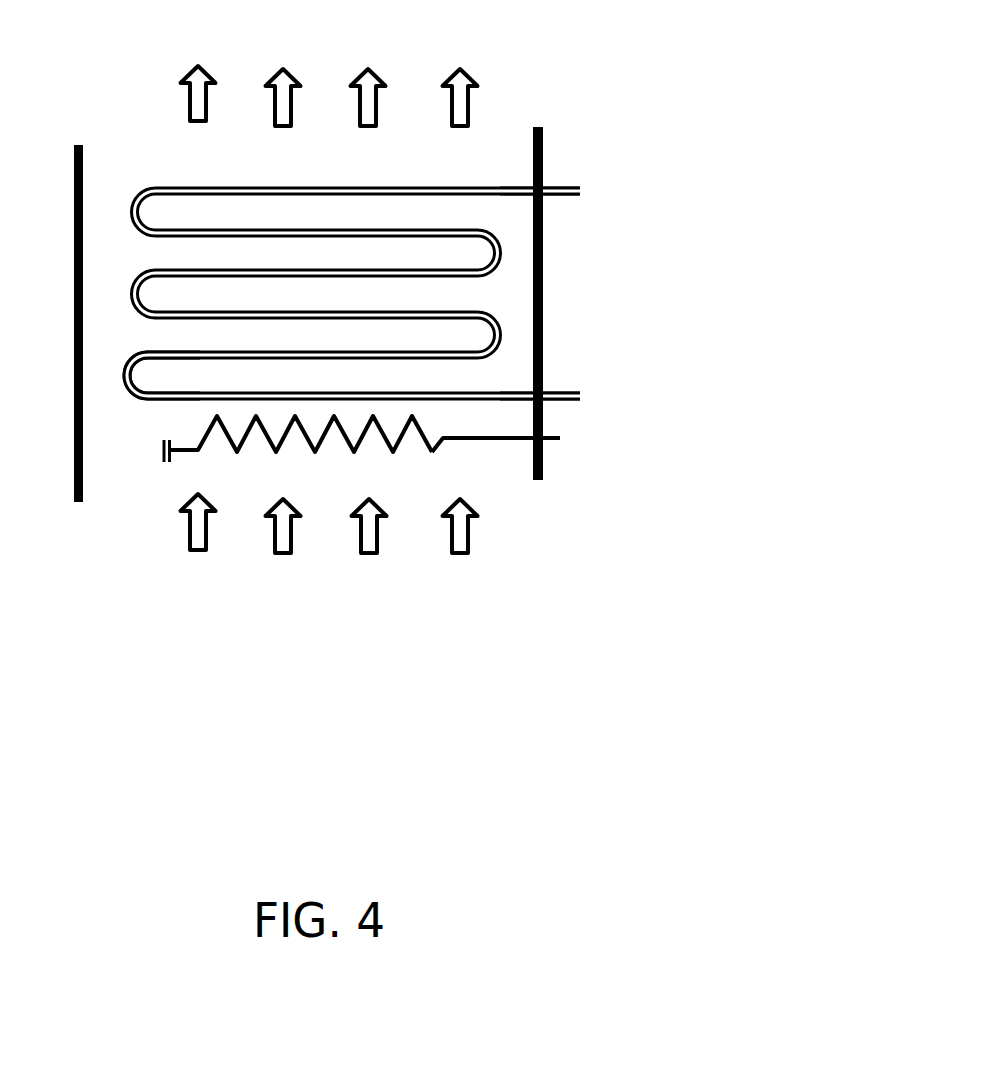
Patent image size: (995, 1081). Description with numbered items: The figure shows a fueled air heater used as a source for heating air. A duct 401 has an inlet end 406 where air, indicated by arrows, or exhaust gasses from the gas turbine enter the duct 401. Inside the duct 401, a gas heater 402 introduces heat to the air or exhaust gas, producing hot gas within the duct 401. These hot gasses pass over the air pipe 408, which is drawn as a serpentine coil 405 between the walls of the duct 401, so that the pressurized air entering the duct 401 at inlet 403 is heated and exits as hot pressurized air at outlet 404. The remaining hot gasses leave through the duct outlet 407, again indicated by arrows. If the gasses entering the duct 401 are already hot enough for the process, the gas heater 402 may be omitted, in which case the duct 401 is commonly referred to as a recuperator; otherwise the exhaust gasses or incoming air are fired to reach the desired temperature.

The duct 401 is at (553, 118).
The gas heater 402 is at (572, 437).
The inlet 403 is at (594, 192).
The outlet 404 is at (590, 395).
The serpentine tube 405 is at (515, 295).
The inlet end 406 is at (321, 484).
The duct outlet 407 is at (329, 111).
The air pipe 408 is at (148, 412).